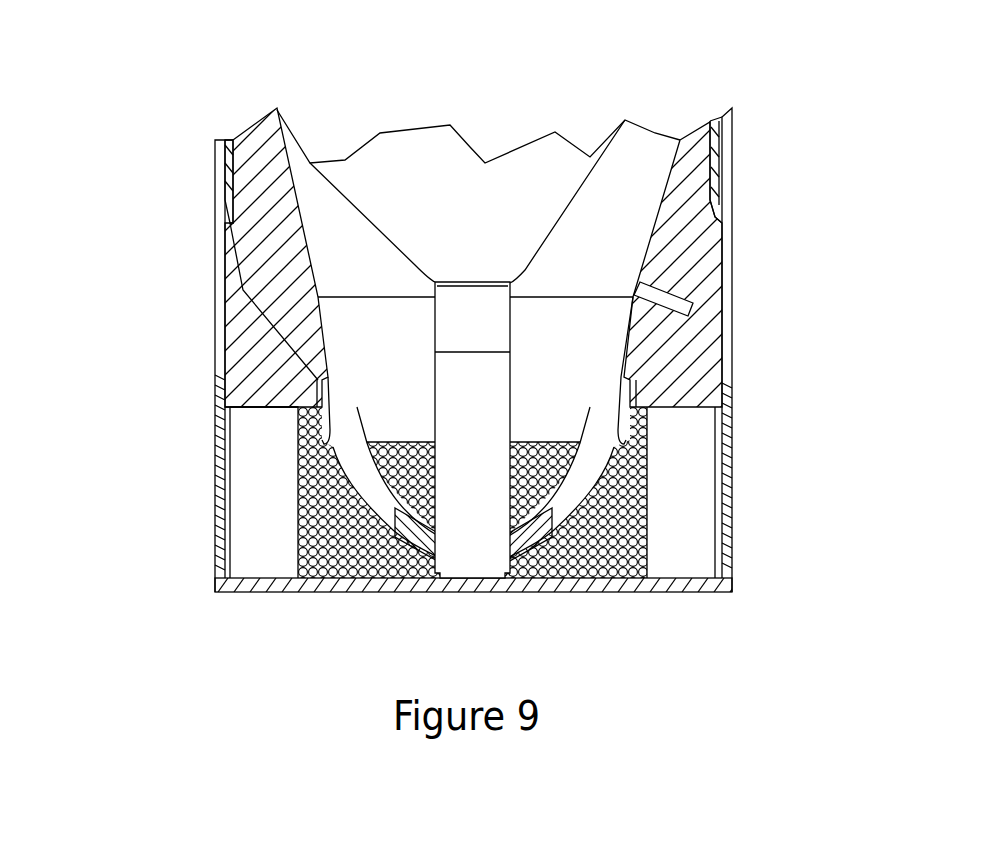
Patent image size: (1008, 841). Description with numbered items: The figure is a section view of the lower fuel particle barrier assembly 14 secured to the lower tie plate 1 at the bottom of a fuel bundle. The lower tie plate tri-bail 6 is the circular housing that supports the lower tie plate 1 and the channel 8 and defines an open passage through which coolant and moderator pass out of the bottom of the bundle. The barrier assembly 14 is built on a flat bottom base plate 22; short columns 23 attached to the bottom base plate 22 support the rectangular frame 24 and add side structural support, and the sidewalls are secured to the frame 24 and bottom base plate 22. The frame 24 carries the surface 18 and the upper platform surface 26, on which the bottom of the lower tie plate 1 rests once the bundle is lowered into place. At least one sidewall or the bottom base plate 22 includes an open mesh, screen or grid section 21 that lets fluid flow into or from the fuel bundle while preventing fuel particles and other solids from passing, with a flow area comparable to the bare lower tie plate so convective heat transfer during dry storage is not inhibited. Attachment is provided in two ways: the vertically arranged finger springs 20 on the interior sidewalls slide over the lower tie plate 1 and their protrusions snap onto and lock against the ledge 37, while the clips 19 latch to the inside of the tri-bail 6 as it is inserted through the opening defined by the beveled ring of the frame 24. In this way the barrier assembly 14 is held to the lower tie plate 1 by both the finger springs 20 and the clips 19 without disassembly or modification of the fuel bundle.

The lower fuel particle barrier assembly 14 is at (123, 138).
The clips 19 is at (473, 282).
The channel 8 is at (723, 150).
The finger springs 20 is at (733, 223).
The ledge 37 is at (225, 220).
The upper platform surface 26 is at (235, 316).
The rectangular frame 24 is at (248, 357).
The lower tie plate 1 is at (655, 325).
The surface 18 is at (657, 367).
The lower tie plate tri-bail 6 is at (633, 425).
The short columns 23 is at (253, 522).
The open mesh, screen or grid section 21 is at (617, 517).
The bottom base plate 22 is at (672, 592).